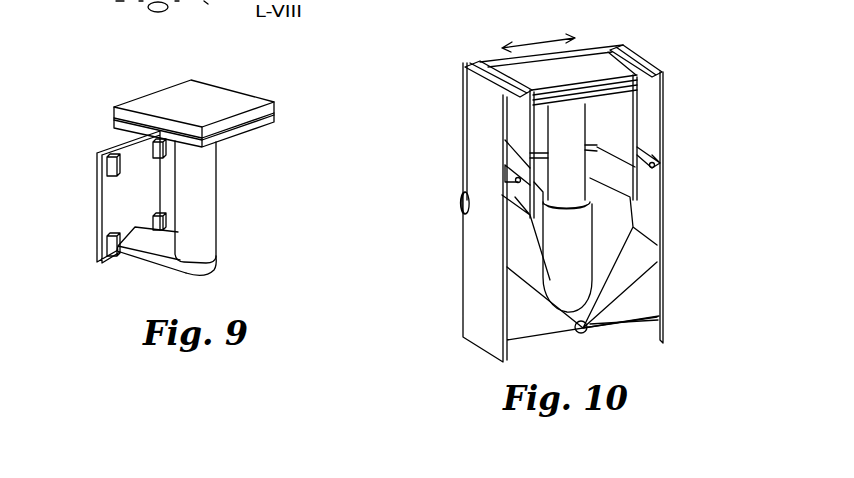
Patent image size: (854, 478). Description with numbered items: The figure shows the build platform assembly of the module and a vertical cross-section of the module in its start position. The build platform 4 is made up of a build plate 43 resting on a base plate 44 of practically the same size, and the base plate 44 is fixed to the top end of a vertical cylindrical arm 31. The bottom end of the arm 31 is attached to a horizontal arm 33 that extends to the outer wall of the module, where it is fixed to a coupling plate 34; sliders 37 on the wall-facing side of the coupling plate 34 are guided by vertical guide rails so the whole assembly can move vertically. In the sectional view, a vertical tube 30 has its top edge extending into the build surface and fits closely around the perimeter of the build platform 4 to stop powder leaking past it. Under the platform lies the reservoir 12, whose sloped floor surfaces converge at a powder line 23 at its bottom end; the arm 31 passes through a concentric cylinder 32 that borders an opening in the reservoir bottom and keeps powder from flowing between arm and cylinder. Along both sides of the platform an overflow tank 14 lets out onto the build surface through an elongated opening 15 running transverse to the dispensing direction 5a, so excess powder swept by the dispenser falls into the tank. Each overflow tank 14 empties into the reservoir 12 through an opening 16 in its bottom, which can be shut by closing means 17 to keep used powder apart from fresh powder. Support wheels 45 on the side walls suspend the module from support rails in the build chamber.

In FIG. 9, the build platform 4 is at (235, 103).
In FIG. 9, the build plate 43 is at (267, 115).
In FIG. 9, the base plate 44 is at (240, 130).
In FIG. 9, the vertical cylindrical arm 31 is at (203, 203).
In FIG. 10, the vertical cylindrical arm 31 is at (577, 133).
In FIG. 9, the coupling plate 34 is at (100, 213).
In FIG. 9, the sliders 37 is at (107, 165).
In FIG. 9, the horizontal arm 33 is at (157, 245).
In FIG. 10, the overflow tank 14 is at (648, 108).
In FIG. 10, the opening 15 is at (468, 65).
In FIG. 10, the dispensing direction 5a is at (535, 43).
In FIG. 10, the vertical tube 30 is at (530, 135).
In FIG. 10, the concentric cylinder 32 is at (560, 268).
In FIG. 10, the reservoir 12 is at (602, 262).
In FIG. 10, the powder line 23 is at (586, 331).
In FIG. 10, the opening 16 is at (652, 150).
In FIG. 10, the closing means 17 is at (516, 180).
In FIG. 10, the support wheels 45 is at (460, 205).